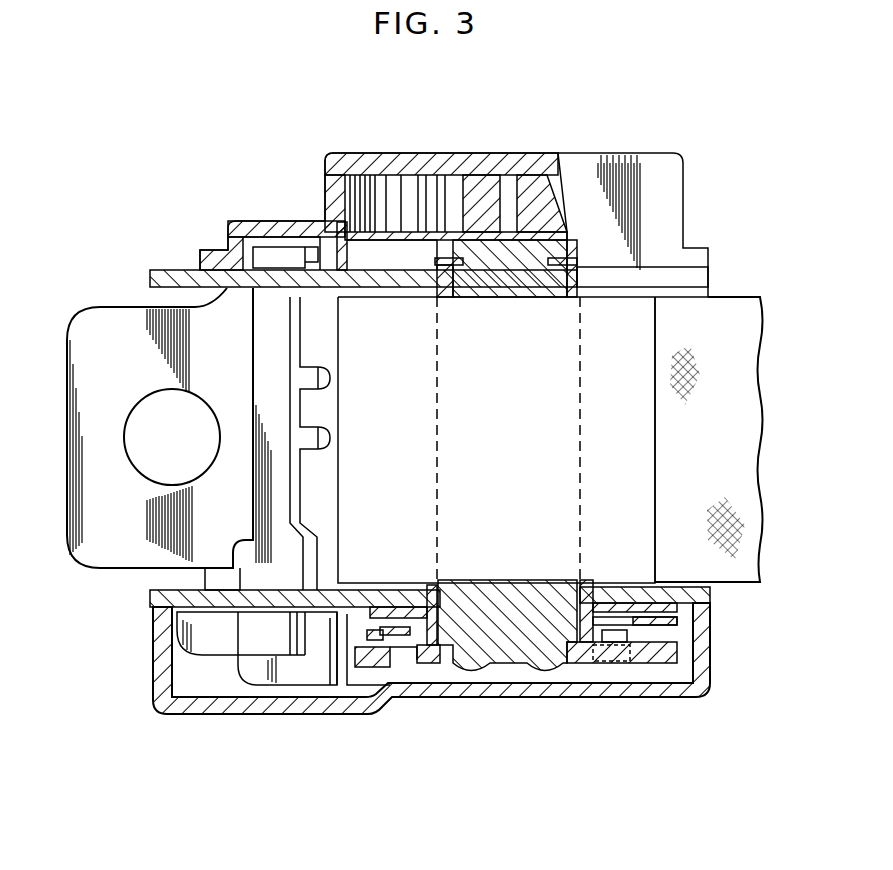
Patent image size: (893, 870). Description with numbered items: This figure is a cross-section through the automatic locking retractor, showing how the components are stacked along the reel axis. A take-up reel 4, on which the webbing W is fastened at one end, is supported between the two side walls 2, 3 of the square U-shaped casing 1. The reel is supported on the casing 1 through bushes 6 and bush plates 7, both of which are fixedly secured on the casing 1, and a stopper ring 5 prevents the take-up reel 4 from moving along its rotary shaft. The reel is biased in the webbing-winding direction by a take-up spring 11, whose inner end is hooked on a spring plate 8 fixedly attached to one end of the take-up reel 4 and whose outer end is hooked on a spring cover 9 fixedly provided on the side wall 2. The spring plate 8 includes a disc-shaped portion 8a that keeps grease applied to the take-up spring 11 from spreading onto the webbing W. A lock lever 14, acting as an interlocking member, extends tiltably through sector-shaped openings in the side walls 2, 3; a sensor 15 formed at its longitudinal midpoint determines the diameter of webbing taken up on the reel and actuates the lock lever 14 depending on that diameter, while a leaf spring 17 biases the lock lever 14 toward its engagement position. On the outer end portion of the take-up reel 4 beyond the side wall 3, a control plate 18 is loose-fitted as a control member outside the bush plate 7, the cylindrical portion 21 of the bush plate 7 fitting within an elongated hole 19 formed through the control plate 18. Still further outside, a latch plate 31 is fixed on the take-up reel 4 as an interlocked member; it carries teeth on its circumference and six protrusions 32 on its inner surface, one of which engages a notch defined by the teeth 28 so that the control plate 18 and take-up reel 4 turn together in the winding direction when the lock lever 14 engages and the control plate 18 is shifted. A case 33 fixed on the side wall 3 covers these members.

The casing 1 is at (112, 567).
The side wall 2 is at (680, 277).
The side wall 3 is at (158, 602).
The take-up reel 4 is at (540, 662).
The stopper ring 5 is at (465, 290).
The bush 6 is at (557, 290).
The bush plate 7 is at (712, 610).
The spring plate 8 is at (487, 193).
The disc-shaped portion 8a is at (390, 242).
The spring cover 9 is at (640, 185).
The take-up spring 11 is at (390, 192).
The lock lever 14 is at (278, 258).
The sensor 15 is at (300, 438).
The leaf spring 17 is at (200, 638).
The control plate 18 is at (345, 632).
The elongated hole 19 is at (613, 628).
The cylindrical portion 21 is at (586, 640).
The teeth 28 is at (376, 604).
The latch plate 31 is at (662, 665).
The protrusions 32 is at (412, 665).
The case 33 is at (712, 655).
The webbing W is at (728, 322).